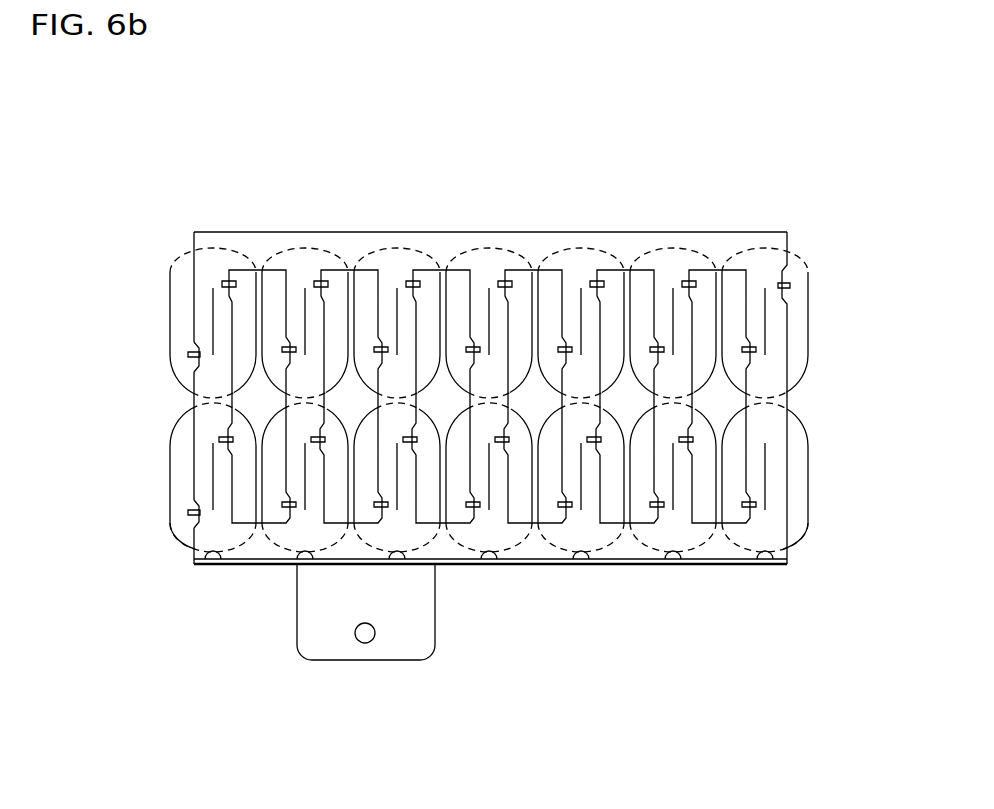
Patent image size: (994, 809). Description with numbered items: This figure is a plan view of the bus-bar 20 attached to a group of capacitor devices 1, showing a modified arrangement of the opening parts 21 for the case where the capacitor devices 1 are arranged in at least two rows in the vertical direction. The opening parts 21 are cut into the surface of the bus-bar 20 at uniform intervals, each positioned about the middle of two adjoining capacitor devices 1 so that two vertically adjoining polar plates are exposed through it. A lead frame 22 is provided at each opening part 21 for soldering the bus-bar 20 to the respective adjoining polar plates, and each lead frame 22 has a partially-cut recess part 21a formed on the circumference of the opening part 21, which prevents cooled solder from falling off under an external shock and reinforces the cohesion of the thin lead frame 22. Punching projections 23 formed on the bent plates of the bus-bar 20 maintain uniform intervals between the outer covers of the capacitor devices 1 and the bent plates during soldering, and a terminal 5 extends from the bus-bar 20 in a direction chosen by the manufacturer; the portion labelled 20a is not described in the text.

The capacitor device 1 is at (800, 484).
The terminal 5 is at (317, 625).
The bus-bar 20 is at (671, 208).
The cell accommodating portion 20a is at (358, 248).
The opening part 21 is at (548, 303).
The recess part 21a is at (196, 347).
The lead frame 22 is at (790, 285).
The punching projection 23 is at (491, 562).